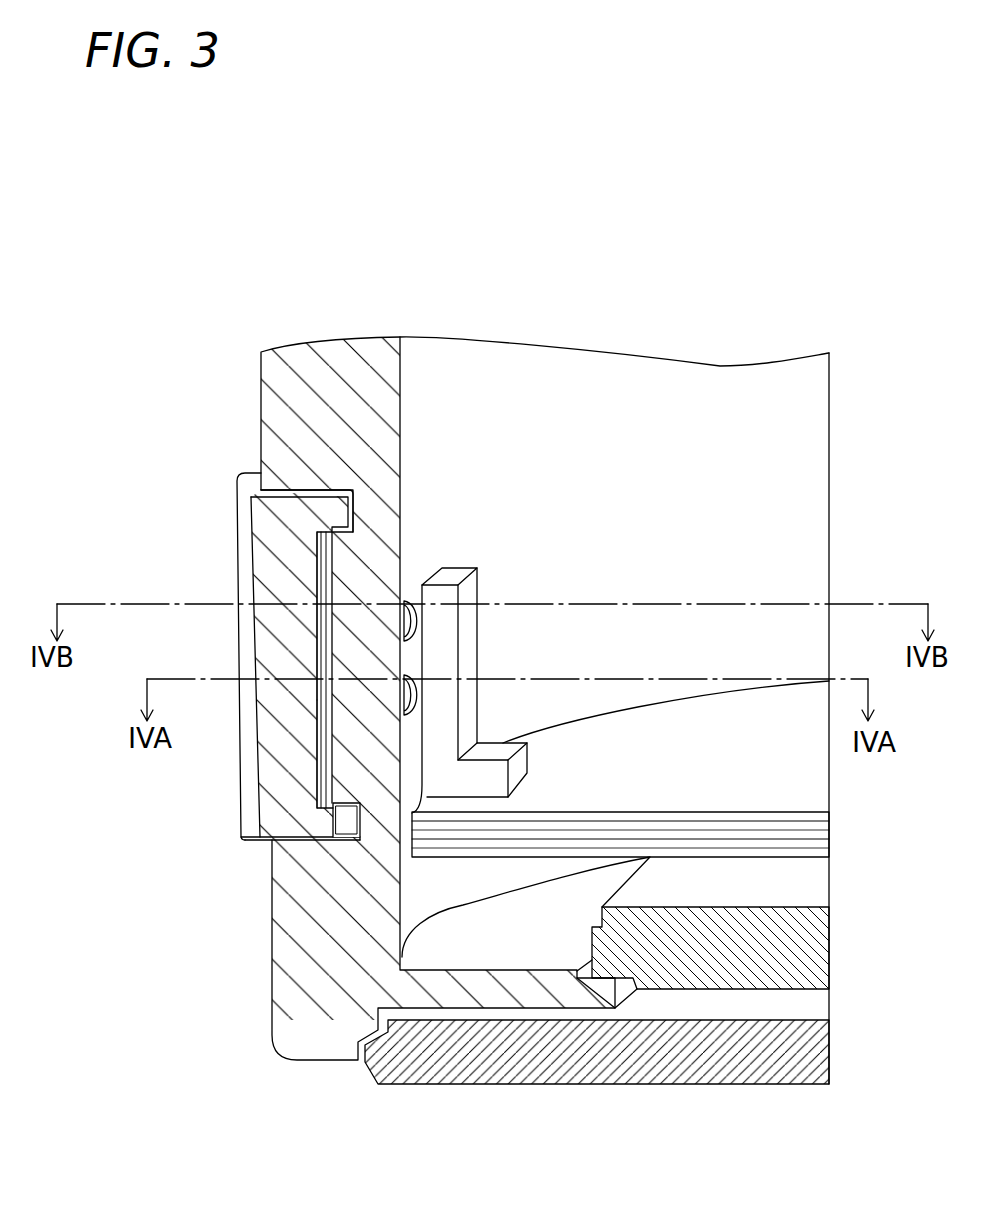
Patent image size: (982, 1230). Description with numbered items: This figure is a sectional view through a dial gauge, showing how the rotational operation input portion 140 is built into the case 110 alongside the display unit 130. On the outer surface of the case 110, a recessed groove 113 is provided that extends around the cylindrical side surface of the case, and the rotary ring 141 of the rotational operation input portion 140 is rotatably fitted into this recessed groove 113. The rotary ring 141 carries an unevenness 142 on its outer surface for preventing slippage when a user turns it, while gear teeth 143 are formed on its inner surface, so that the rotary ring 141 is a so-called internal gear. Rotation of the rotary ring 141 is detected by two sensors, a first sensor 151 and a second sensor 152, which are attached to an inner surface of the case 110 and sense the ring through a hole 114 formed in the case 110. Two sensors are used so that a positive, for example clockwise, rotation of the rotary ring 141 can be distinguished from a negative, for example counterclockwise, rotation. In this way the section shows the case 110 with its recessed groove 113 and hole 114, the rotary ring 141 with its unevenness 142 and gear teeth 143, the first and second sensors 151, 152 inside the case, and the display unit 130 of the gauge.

The case 110 is at (286, 949).
The recessed groove 113 is at (312, 543).
The hole 114 is at (405, 637).
The display unit 130 is at (680, 1124).
The rotational operation input portion 140 is at (139, 498).
The rotary ring 141 is at (259, 562).
The unevenness 142 is at (244, 527).
The gear teeth 143 is at (323, 590).
The first sensor 151 is at (318, 762).
The second sensor 152 is at (313, 590).